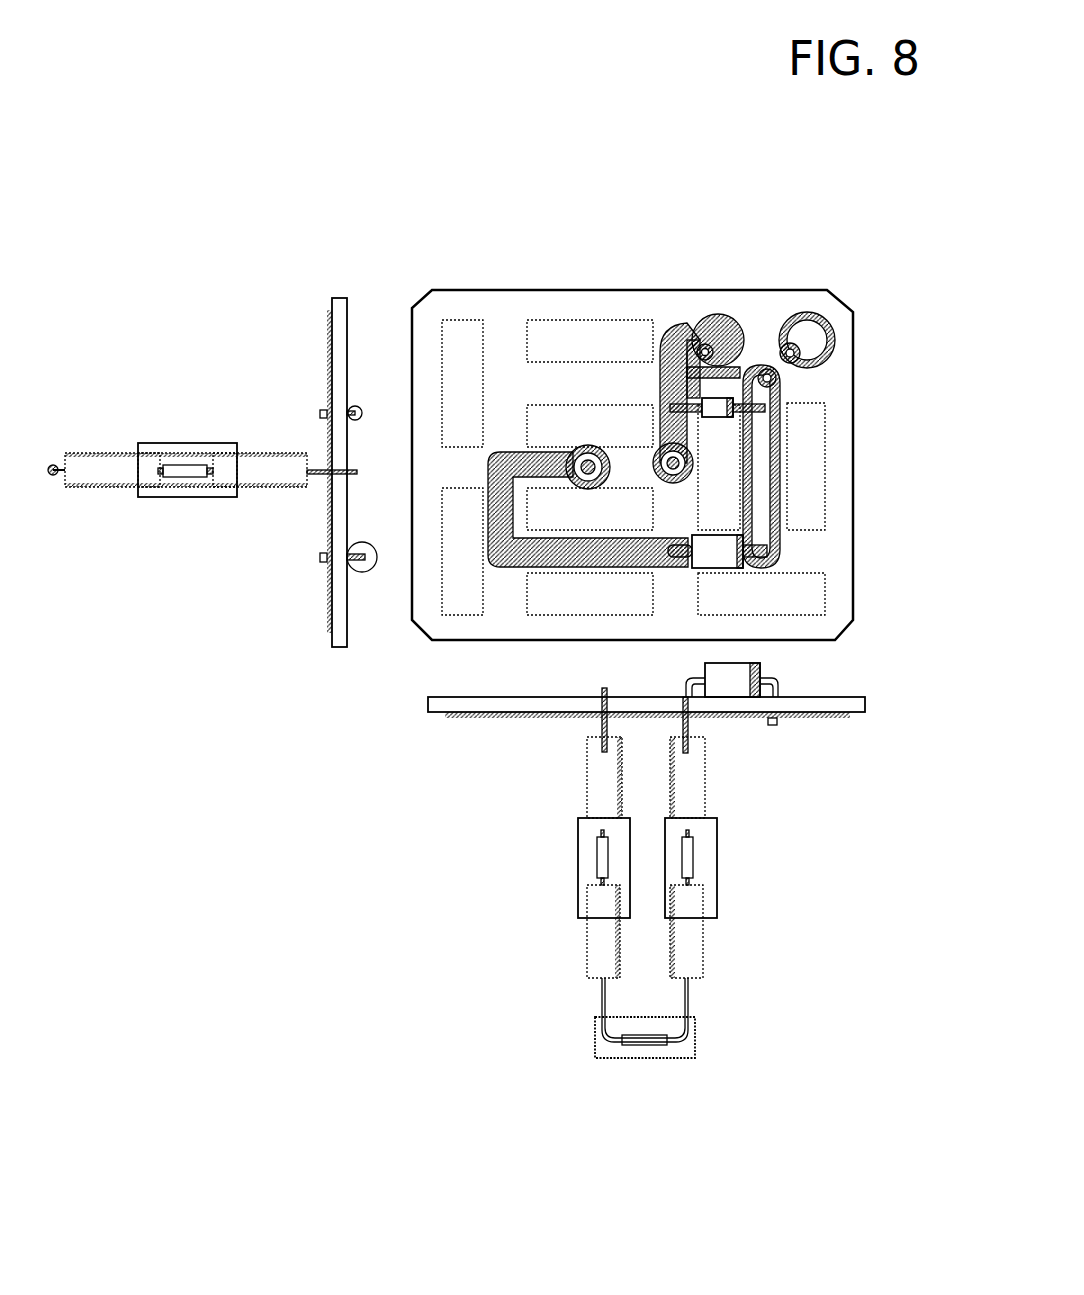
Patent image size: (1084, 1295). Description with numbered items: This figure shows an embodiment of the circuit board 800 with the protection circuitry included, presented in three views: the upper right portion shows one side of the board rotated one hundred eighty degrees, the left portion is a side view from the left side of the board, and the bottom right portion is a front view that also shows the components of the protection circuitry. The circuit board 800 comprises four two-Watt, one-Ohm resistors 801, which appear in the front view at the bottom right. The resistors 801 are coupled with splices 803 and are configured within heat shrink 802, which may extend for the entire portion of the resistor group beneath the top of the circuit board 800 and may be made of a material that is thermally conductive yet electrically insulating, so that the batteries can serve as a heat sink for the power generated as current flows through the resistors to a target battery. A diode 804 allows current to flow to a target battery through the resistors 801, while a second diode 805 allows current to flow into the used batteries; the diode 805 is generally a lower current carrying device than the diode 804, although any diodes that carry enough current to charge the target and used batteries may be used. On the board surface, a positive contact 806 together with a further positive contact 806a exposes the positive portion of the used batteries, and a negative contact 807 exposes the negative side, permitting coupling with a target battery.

The circuit board 800 is at (468, 298).
The resistors 801 is at (92, 497).
The heat shrink 802 is at (213, 498).
The splices 803 is at (177, 482).
The diode 804 is at (705, 550).
The diode 805 is at (358, 405).
The positive contact 806 is at (712, 328).
The positive contact 806a is at (788, 387).
The negative contact 807 is at (813, 332).